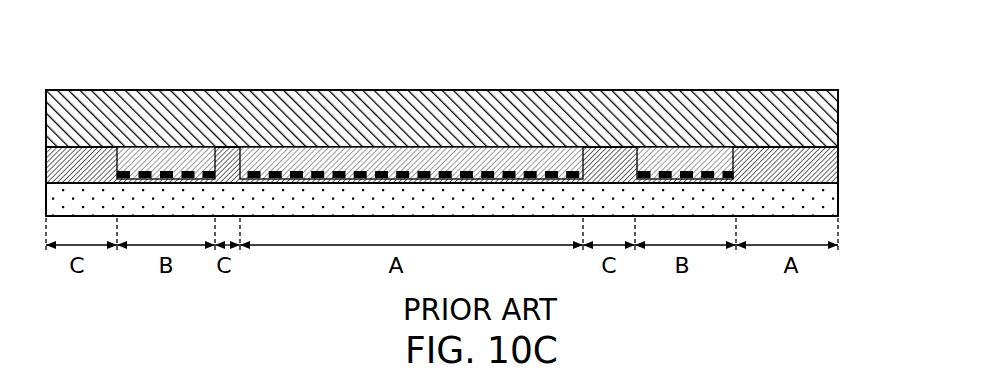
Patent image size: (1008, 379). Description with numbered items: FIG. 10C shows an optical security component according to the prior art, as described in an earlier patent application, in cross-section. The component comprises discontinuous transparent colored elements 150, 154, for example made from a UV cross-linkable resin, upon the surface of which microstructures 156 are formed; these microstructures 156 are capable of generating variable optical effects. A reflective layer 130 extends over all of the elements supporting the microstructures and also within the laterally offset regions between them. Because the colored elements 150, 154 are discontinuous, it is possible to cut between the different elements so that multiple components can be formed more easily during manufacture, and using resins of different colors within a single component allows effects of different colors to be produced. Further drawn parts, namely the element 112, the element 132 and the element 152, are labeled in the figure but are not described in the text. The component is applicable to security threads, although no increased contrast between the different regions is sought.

The cover layer 112 is at (567, 113).
The reflective layer 130 is at (824, 158).
The substrate 132 is at (824, 205).
The transparent colored element 150 is at (460, 170).
The light emitting elements 152 is at (318, 170).
The transparent colored element 154 is at (132, 170).
The microstructures 156 is at (192, 170).